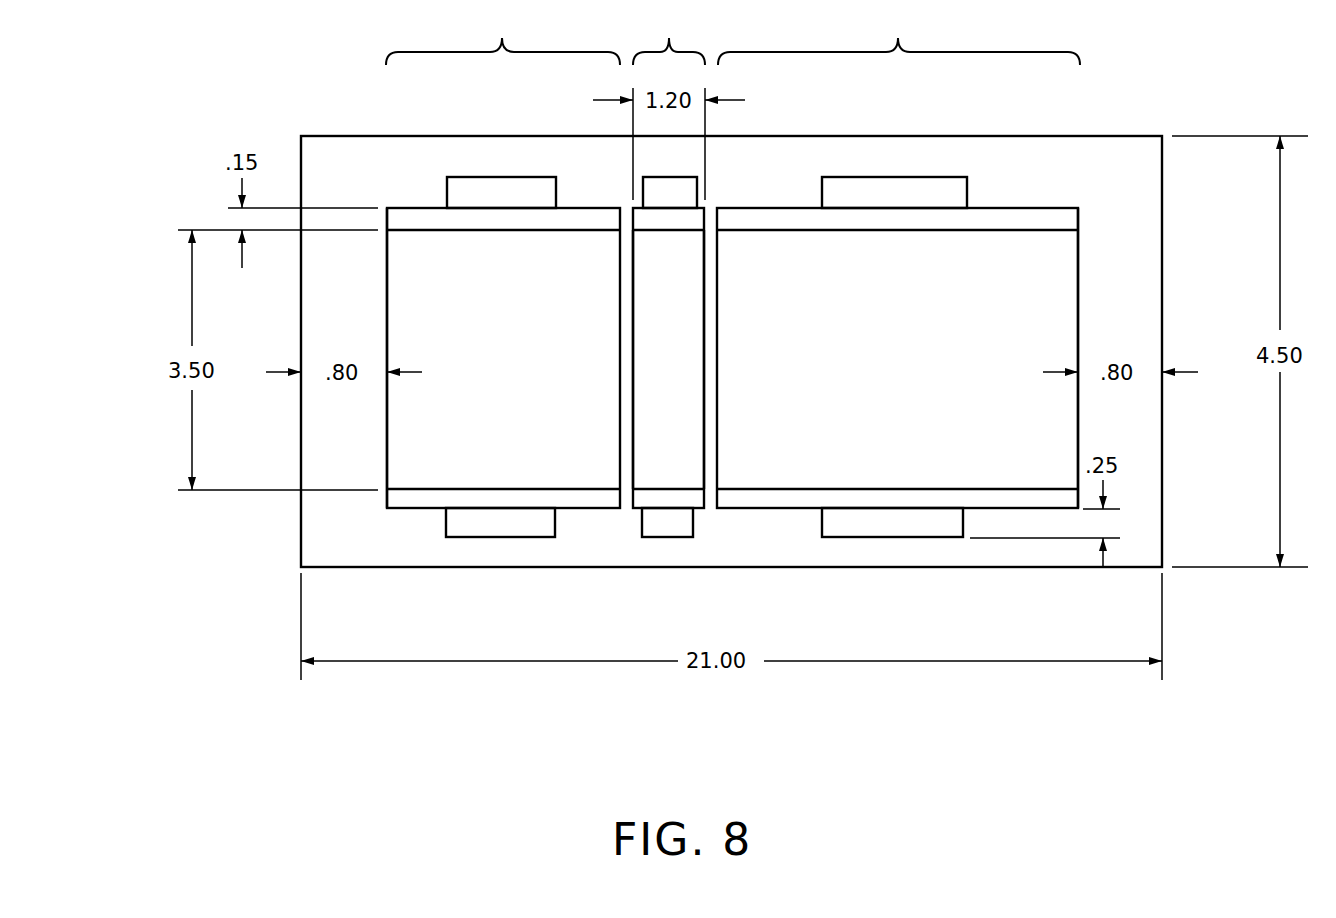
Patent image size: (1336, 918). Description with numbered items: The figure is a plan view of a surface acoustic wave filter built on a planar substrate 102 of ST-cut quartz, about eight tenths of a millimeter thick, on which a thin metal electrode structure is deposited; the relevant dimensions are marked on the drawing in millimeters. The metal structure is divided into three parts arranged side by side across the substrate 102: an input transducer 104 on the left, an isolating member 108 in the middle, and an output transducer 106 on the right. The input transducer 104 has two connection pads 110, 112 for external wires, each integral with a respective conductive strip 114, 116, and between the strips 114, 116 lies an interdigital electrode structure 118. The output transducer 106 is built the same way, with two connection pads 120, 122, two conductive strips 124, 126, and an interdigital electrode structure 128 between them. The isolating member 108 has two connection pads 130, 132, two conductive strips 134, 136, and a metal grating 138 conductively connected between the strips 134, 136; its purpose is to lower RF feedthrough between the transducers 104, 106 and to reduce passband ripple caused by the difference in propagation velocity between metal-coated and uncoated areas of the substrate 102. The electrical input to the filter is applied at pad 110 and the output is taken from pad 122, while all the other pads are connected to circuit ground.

The planar substrate 102 is at (305, 528).
The input transducer 104 is at (503, 259).
The output transducer 106 is at (898, 259).
The isolating member 108 is at (669, 259).
The connection pad 110 is at (470, 188).
The connection pad 112 is at (513, 530).
The conductive strip 114 is at (572, 215).
The conductive strip 116 is at (410, 500).
The interdigital electrode structure 118 is at (398, 296).
The connection pad 120 is at (867, 188).
The connection pad 122 is at (948, 527).
The conductive strip 124 is at (1015, 215).
The conductive strip 126 is at (775, 505).
The interdigital electrode structure 128 is at (1068, 322).
The connection pad 130 is at (680, 188).
The connection pad 132 is at (675, 530).
The conductive strip 134 is at (670, 228).
The conductive strip 136 is at (642, 500).
The metal grating 138 is at (693, 372).